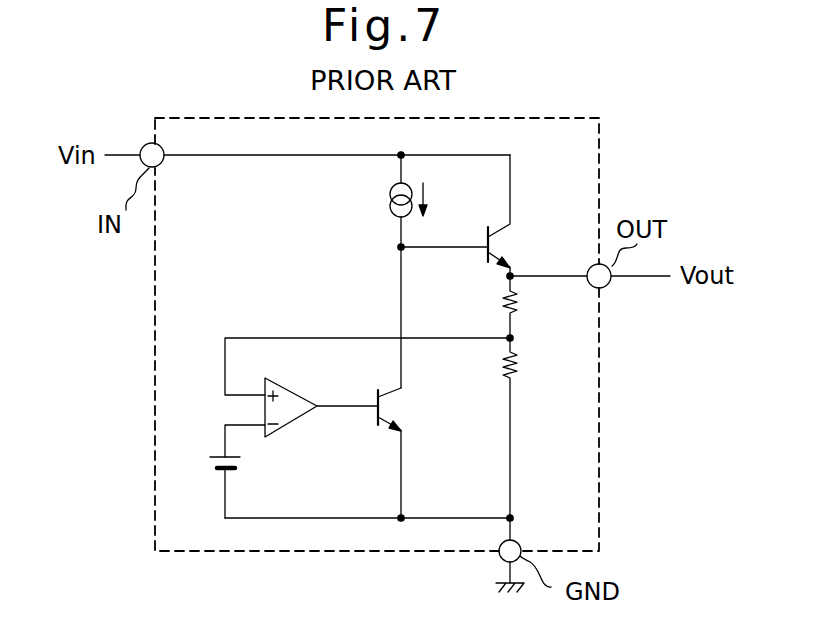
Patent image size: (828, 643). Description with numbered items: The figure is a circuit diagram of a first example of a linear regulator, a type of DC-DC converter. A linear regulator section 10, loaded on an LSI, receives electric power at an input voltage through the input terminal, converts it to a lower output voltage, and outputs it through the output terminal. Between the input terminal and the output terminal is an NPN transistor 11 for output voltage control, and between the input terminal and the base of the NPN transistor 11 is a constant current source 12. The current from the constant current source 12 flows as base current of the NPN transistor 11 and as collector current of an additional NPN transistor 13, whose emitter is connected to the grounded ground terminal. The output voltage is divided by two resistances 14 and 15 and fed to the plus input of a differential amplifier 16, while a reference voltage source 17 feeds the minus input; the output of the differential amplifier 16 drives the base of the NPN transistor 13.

The linear regulator section 10 is at (606, 192).
The NPN transistor 11 is at (509, 240).
The constant current source 12 is at (386, 200).
The NPN transistor 13 is at (394, 405).
The resistance 14 is at (519, 299).
The resistance 15 is at (528, 362).
The differential amplifier 16 is at (297, 390).
The reference voltage source 17 is at (245, 465).